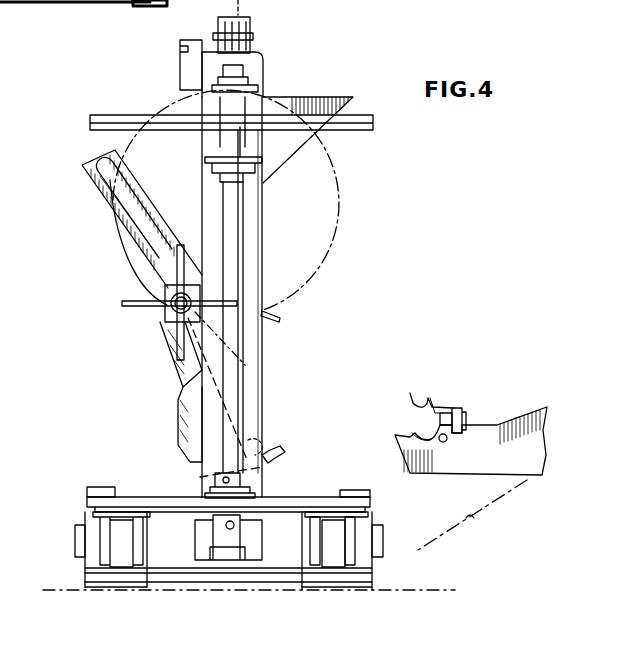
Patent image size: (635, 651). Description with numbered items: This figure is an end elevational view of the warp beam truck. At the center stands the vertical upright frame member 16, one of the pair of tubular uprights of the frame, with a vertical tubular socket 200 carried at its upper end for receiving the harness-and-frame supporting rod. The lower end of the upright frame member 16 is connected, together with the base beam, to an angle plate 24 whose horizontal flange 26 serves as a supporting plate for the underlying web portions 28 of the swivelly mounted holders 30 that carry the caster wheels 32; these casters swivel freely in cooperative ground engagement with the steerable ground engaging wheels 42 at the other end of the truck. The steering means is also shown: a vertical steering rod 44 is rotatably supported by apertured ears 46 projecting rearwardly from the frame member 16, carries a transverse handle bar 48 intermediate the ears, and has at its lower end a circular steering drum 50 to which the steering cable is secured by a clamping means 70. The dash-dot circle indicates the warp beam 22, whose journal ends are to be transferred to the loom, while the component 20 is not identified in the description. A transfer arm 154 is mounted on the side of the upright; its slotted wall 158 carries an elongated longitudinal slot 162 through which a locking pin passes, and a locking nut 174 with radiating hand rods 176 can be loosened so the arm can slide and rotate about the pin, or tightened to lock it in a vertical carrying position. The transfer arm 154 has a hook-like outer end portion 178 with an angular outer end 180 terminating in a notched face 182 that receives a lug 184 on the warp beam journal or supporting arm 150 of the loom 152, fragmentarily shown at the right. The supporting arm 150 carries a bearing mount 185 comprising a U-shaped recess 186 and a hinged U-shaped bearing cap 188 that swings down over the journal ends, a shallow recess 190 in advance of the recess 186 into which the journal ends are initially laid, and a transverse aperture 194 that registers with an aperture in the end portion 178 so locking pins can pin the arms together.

The upright frame member 16 is at (255, 365).
The support plate 20 is at (368, 104).
The warp beam 22 is at (350, 218).
The angle plate 24 is at (136, 481).
The horizontal flange 26 is at (323, 500).
The web portions 28 is at (90, 3).
The holders 30 is at (380, 537).
The caster wheels 32 is at (118, 543).
The ground engaging wheels 42 is at (102, 495).
The steering rod 44 is at (235, 253).
The apertured ears 46 is at (263, 90).
The handle bar 48 is at (118, 117).
The steering drum 50 is at (265, 527).
The clamping means 70 is at (207, 520).
The warp beam supporting arms 150 is at (532, 452).
The loom 152 is at (567, 419).
The transfer arms 154 is at (157, 340).
The side walls 158 is at (97, 153).
The longitudinal slots 162 is at (137, 232).
The locking nut 174 is at (163, 315).
The hand rods 176 is at (133, 300).
The hook-like end portion 178 is at (190, 440).
The angular outer end 180 is at (280, 465).
The notched out face 182 is at (268, 433).
The lug 184 is at (470, 422).
The bearing mounts 185 is at (451, 388).
The U-shaped recess 186 is at (423, 437).
The hinged U-shaped portion 188 is at (427, 395).
The shallow recess 190 is at (410, 432).
The transverse apertures 194 is at (446, 441).
The tubular socket 200 is at (192, 72).